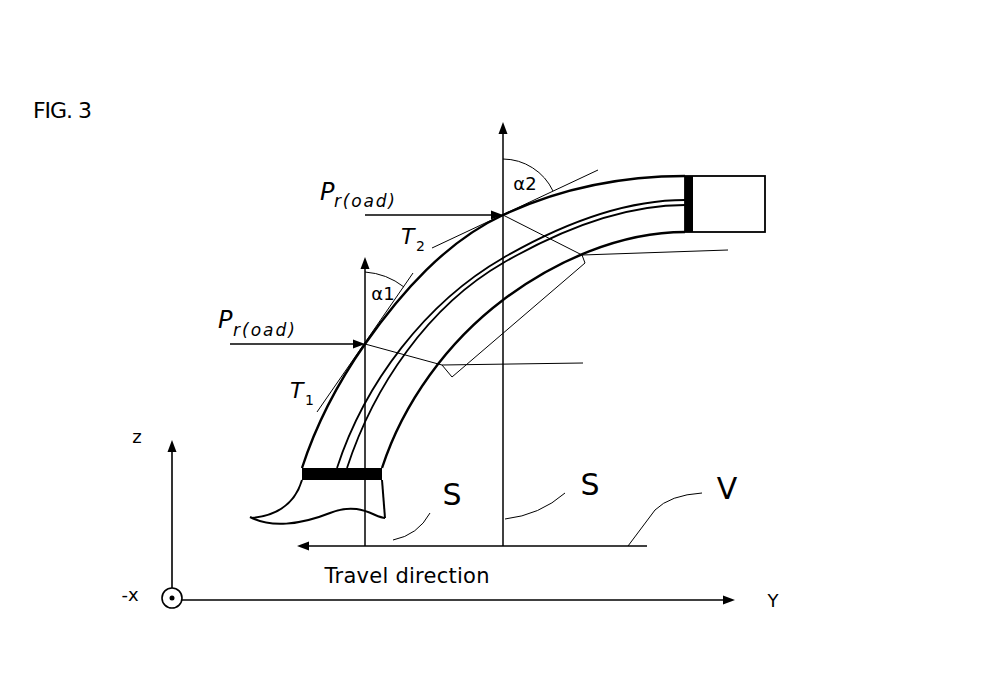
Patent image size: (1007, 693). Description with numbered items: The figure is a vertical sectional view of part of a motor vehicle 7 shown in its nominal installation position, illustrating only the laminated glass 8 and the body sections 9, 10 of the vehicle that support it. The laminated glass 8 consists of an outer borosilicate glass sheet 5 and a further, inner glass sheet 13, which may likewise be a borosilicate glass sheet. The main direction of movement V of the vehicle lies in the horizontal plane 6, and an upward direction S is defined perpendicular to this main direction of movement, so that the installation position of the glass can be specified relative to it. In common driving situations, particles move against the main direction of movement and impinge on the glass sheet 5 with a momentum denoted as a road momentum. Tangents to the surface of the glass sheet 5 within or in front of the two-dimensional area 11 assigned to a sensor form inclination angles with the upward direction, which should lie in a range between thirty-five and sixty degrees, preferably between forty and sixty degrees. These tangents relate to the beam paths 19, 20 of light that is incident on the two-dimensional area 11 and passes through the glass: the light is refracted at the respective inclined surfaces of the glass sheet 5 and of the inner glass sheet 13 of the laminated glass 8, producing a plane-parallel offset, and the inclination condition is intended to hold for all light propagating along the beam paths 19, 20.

The glass sheet 5 is at (645, 190).
The horizontal plane 6 is at (713, 598).
The motor vehicle 7 is at (281, 259).
The laminated glass 8 is at (574, 147).
The body section 9 is at (750, 200).
The body section 10 is at (273, 517).
The two-dimensional area 11 is at (520, 317).
The further glass sheet 13 is at (373, 445).
The beam path 19 is at (478, 371).
The beam path 20 is at (615, 253).